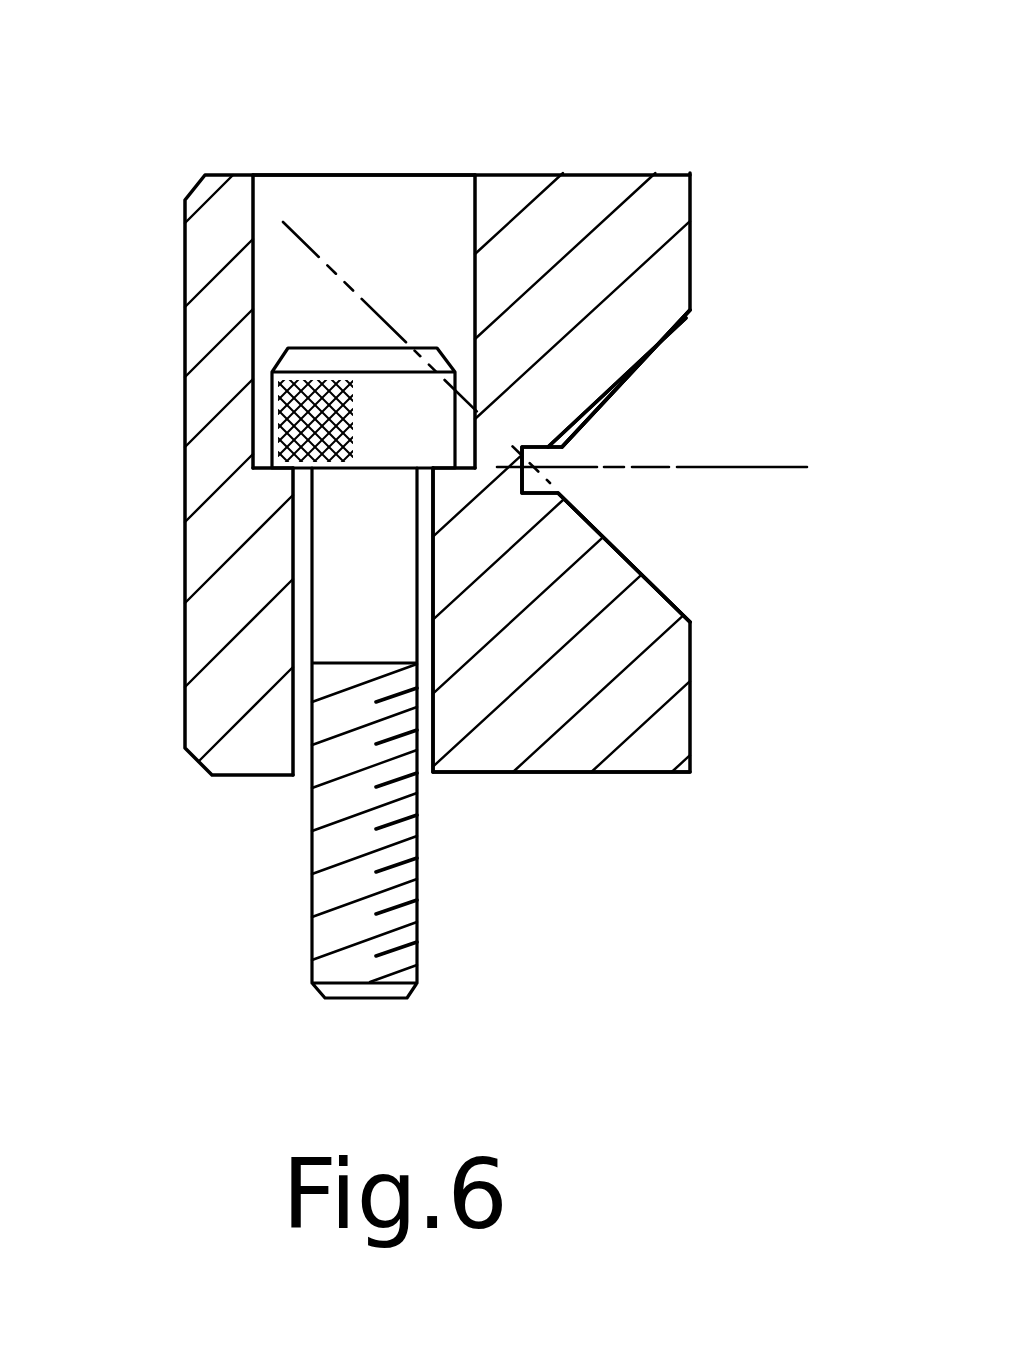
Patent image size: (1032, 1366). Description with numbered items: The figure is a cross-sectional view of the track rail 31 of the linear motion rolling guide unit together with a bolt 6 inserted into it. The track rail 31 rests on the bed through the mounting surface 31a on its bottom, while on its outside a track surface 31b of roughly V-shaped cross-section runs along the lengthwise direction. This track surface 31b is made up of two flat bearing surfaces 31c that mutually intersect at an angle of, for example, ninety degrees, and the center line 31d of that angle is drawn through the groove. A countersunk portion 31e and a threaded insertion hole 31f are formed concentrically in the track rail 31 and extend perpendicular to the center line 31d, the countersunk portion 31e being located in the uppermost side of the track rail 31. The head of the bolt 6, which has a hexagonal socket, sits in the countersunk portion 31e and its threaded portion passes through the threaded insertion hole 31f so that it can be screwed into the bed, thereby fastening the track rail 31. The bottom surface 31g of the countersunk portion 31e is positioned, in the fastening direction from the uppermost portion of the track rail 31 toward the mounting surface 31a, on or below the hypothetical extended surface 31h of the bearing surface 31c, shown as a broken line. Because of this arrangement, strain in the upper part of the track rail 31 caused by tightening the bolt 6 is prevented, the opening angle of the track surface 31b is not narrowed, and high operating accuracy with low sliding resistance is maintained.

The track rail 31 is at (240, 158).
The mounting surface 31a is at (628, 773).
The track surface 31b is at (627, 385).
The bearing surfaces 31c is at (650, 350).
The center line 31d is at (750, 467).
The countersunk portion 31e is at (475, 207).
The threaded insertion hole 31f is at (293, 752).
The bottom surface 31g is at (405, 468).
The hypothetical extended surface 31h is at (328, 175).
The bolt 6 is at (392, 838).